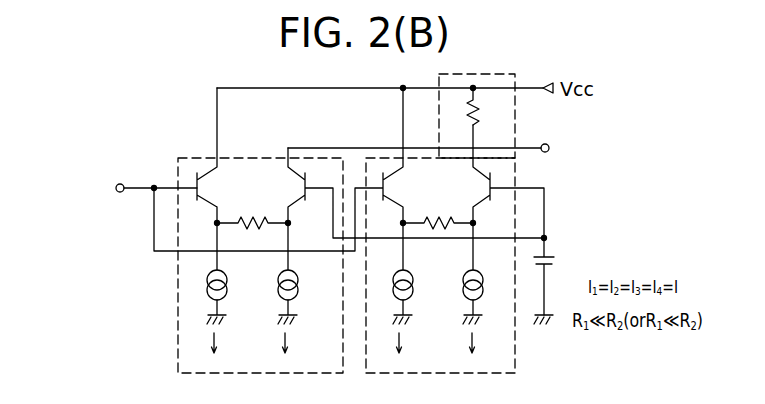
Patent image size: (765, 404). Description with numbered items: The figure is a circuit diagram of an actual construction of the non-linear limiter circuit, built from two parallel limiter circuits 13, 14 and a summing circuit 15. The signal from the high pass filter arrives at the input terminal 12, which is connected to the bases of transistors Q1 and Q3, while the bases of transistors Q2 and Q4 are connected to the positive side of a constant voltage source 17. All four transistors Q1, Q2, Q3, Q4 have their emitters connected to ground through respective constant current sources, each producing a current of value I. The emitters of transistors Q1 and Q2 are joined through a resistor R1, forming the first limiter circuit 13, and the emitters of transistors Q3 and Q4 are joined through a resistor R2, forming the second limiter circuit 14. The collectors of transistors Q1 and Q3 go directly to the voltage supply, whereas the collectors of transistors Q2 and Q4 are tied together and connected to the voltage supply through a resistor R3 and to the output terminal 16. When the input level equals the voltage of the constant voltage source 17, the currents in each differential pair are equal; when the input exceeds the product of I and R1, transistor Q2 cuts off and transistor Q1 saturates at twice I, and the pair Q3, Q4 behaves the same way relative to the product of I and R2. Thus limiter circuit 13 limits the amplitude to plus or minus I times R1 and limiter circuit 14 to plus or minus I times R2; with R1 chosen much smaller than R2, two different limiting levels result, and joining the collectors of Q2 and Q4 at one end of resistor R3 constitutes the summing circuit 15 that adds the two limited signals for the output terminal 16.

The input terminal 12 is at (121, 193).
The limiter circuit 13 is at (357, 230).
The limiter circuit 14 is at (366, 230).
The summing circuit 15 is at (497, 102).
The output terminal 16 is at (546, 153).
The constant voltage source 17 is at (553, 256).
The transistor Q1 is at (219, 179).
The transistor Q2 is at (401, 209).
The transistor Q3 is at (288, 179).
The transistor Q4 is at (495, 197).
The resistor R1 is at (253, 212).
The resistor R2 is at (438, 211).
The resistor R3 is at (516, 74).